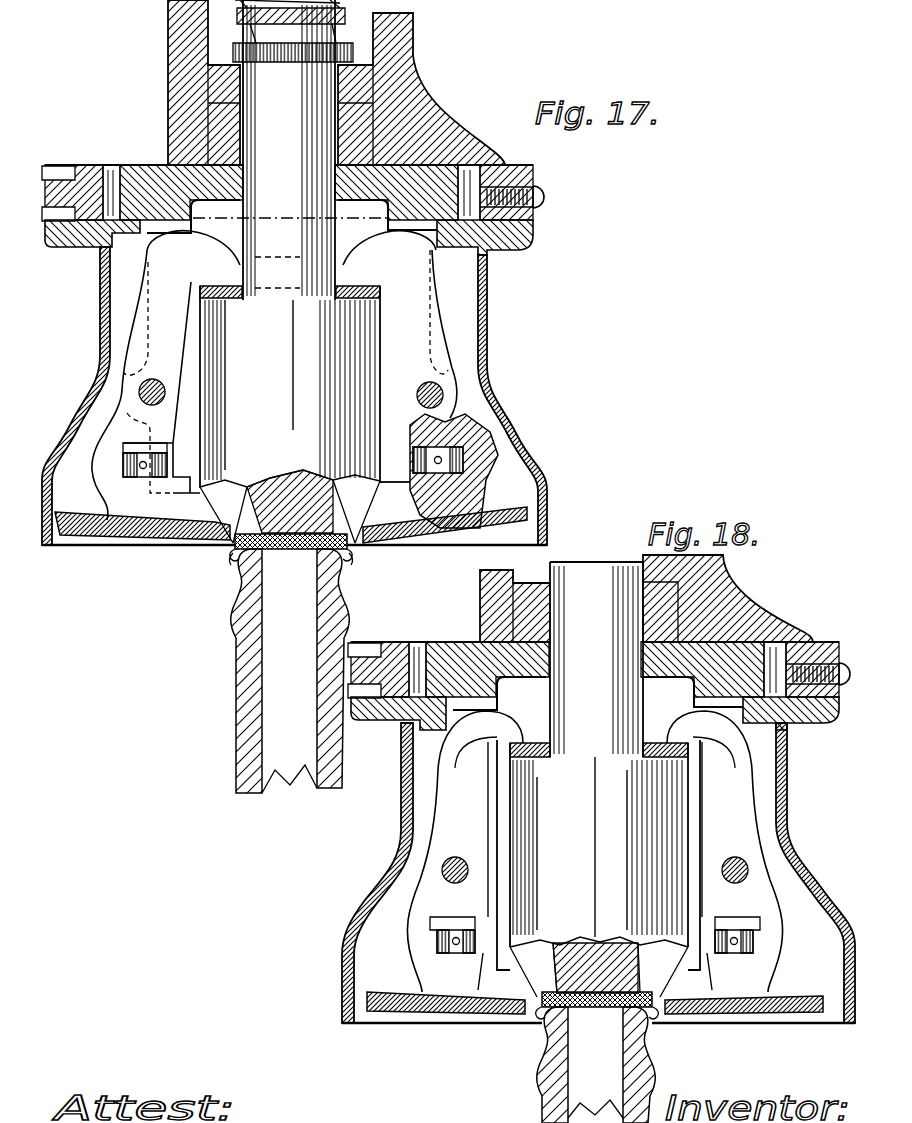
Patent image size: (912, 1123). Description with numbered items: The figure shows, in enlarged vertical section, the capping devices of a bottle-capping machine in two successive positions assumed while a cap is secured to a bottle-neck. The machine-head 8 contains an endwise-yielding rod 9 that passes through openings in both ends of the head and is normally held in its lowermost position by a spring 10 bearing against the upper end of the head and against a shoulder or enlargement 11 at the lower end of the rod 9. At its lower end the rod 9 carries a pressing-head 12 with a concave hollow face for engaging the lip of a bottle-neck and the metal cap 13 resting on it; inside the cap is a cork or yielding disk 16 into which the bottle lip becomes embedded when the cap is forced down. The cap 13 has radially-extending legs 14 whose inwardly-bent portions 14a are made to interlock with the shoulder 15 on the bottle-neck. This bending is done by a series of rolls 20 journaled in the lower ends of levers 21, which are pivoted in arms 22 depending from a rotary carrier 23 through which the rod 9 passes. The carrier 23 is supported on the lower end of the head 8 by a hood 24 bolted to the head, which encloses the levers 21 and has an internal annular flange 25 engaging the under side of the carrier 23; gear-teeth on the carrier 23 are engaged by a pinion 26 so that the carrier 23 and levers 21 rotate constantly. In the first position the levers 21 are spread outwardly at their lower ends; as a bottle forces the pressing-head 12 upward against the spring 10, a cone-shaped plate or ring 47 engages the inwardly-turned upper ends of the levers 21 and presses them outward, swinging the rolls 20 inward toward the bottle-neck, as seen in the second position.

In FIG. 17, the machine-head 8 is at (411, 30).
In FIG. 18, the machine-head 8 is at (725, 557).
In FIG. 17, the endwise-yielding rod 9 is at (290, 150).
In FIG. 18, the endwise-yielding rod 9 is at (596, 659).
In FIG. 17, the spring 10 is at (334, 21).
In FIG. 17, the shoulder or enlargement 11 is at (305, 53).
In FIG. 17, the pressing-head 12 is at (305, 414).
In FIG. 18, the pressing-head 12 is at (598, 868).
In FIG. 17, the metal cap 13 is at (236, 541).
In FIG. 17, the radially-extending legs 14 is at (352, 561).
In FIG. 17, the inwardly-bent portions 14a is at (237, 570).
In FIG. 17, the shoulder 15 is at (240, 580).
In FIG. 17, the cork or yielding disk 16 is at (306, 551).
In FIG. 17, the bending-rolls 20 is at (153, 248).
In FIG. 18, the bending-rolls 20 is at (406, 996).
In FIG. 17, the levers 21 is at (143, 302).
In FIG. 18, the levers 21 is at (594, 851).
In FIG. 17, the arms 22 is at (181, 436).
In FIG. 17, the rotary carrier 23 is at (446, 172).
In FIG. 18, the rotary carrier 23 is at (741, 655).
In FIG. 17, the hood 24 is at (512, 420).
In FIG. 18, the hood 24 is at (792, 849).
In FIG. 17, the internal annular flange 25 is at (531, 238).
In FIG. 18, the internal annular flange 25 is at (796, 699).
In FIG. 17, the pinion 26 is at (98, 154).
In FIG. 18, the pinion 26 is at (404, 630).
In FIG. 17, the cone-shaped plate or ring 47 is at (194, 230).
In FIG. 18, the cone-shaped plate or ring 47 is at (700, 742).